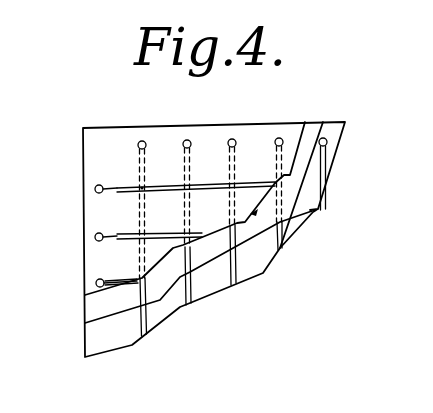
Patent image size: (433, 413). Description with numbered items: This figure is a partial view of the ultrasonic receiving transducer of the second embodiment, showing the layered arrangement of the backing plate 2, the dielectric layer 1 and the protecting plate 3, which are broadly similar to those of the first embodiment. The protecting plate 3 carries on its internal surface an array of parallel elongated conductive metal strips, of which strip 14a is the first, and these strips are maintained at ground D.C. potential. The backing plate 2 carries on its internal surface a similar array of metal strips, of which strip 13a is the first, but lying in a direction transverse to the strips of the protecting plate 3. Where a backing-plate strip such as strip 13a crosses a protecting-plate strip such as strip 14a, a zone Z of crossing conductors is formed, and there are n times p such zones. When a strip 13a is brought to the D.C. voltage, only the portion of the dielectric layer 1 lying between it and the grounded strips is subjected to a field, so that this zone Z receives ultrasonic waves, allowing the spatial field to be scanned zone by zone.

The protecting plate 3 is at (97, 343).
The dielectric layer 1 is at (98, 307).
The metal strip 13a is at (117, 190).
The backing plate 2 is at (98, 229).
The conductive metal strip 14a is at (147, 163).
The zone of crossing conductors Z is at (142, 188).